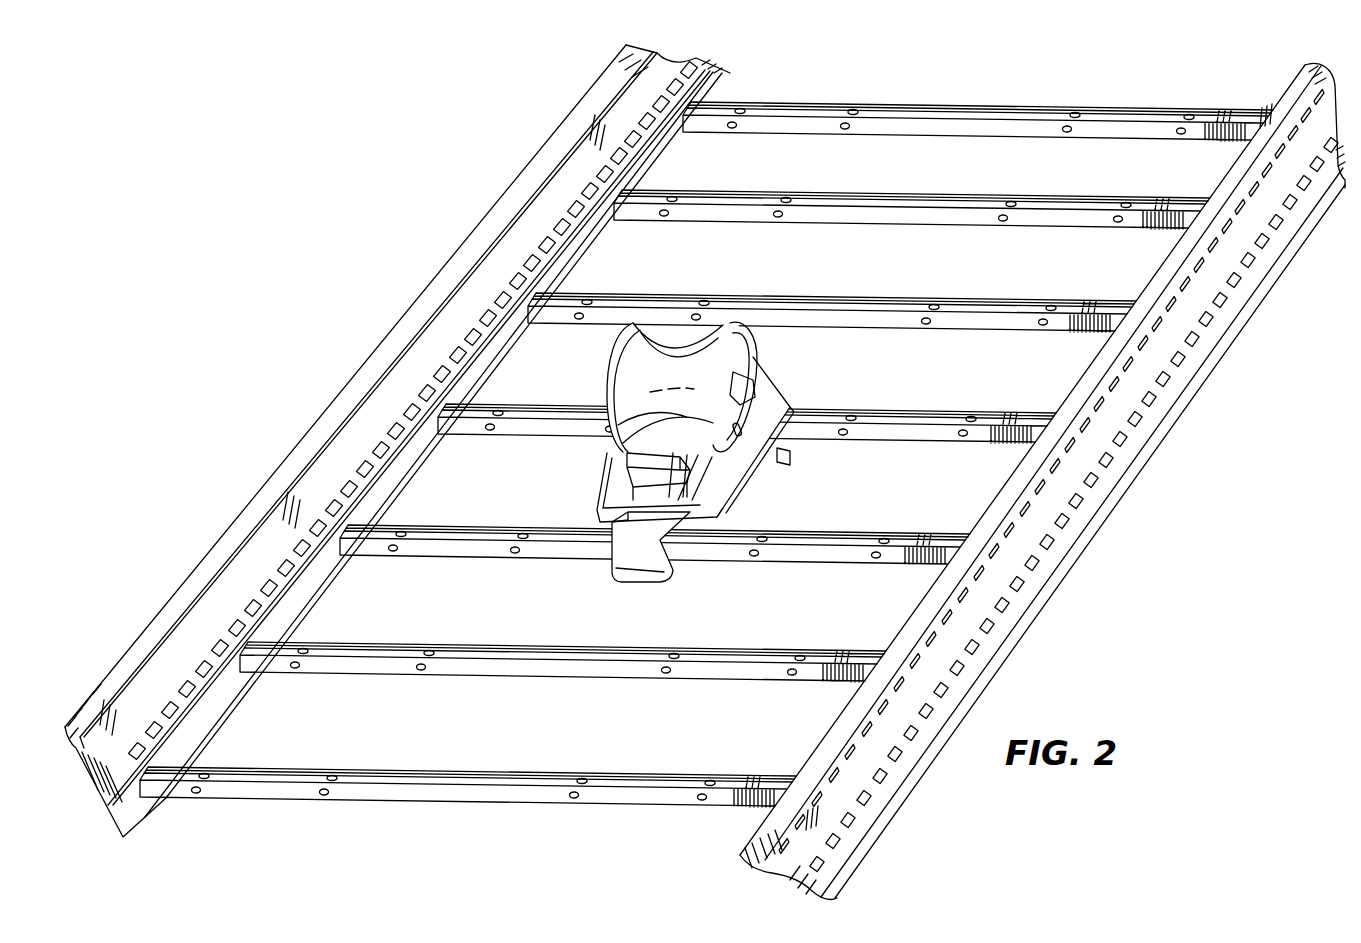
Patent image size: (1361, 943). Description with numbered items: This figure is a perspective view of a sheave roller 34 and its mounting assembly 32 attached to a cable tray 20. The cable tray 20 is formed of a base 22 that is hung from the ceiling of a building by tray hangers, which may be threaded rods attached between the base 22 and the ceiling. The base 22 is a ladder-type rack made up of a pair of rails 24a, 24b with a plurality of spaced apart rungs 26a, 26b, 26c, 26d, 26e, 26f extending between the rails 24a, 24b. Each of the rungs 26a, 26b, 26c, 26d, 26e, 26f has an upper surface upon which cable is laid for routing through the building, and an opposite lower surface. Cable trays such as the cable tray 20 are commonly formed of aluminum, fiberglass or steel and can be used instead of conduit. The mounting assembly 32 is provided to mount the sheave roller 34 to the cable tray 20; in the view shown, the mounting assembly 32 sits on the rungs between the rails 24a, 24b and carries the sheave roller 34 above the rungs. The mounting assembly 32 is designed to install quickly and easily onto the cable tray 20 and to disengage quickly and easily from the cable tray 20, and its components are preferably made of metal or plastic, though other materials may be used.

The cable tray 20 is at (412, 216).
The base 22 is at (200, 550).
The rail 24a is at (275, 493).
The rail 24b is at (1058, 490).
The rung 26a is at (482, 793).
The rung 26b is at (580, 673).
The rung 26c is at (786, 558).
The rung 26d is at (908, 437).
The rung 26e is at (987, 327).
The rung 26f is at (958, 228).
The mounting assembly 32 is at (784, 376).
The sheave roller 34 is at (672, 368).